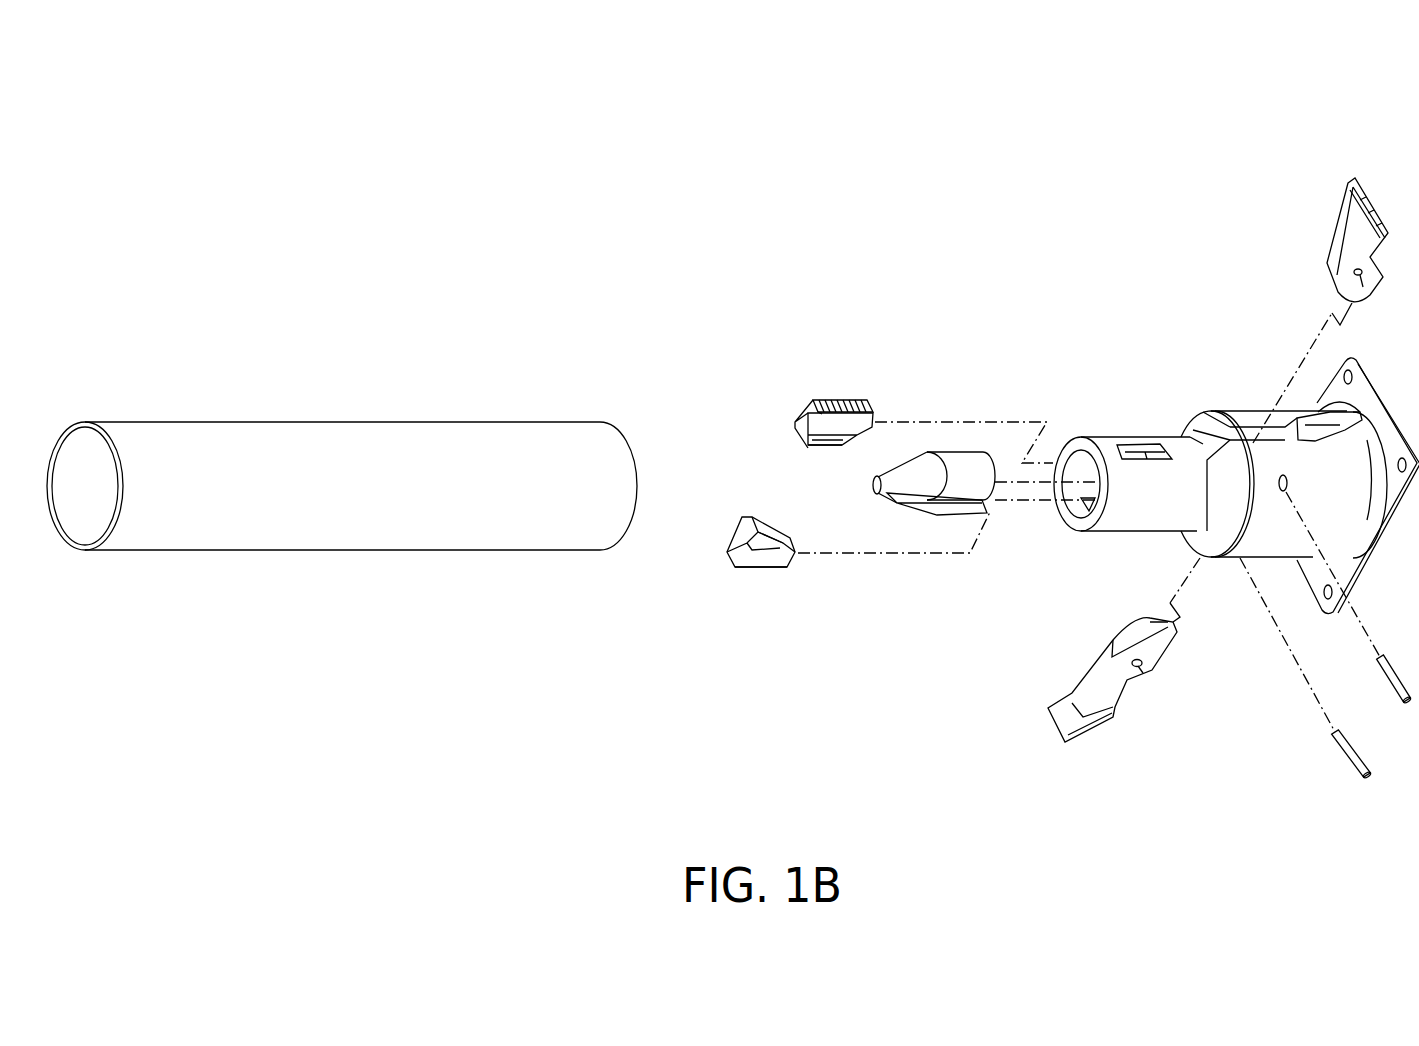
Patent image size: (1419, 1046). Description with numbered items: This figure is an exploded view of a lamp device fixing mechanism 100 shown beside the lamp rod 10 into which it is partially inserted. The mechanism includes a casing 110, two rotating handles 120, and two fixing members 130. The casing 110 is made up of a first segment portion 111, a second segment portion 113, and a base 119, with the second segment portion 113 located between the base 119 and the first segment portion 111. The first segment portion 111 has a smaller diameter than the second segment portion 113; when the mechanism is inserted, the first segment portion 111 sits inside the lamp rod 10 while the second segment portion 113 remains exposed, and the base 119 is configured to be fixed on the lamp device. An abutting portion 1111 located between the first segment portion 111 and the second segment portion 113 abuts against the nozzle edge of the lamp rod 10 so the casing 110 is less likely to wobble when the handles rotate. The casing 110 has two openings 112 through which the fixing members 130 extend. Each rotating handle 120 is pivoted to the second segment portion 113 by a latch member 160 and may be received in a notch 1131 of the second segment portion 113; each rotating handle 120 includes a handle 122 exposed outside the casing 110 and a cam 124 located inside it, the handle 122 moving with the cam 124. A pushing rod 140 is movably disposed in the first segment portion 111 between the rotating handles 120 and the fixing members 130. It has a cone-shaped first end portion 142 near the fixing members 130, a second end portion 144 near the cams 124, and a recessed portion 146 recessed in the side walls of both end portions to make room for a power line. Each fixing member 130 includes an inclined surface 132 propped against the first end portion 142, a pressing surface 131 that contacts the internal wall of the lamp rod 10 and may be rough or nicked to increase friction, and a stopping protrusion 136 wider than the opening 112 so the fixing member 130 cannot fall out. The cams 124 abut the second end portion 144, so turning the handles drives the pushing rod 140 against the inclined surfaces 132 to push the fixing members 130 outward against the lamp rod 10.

The lamp rod 10 is at (315, 372).
The lamp device fixing mechanism 100 is at (992, 185).
The casing 110 is at (1058, 280).
The first segment portion 111 is at (1105, 443).
The opening 112 is at (1152, 448).
The abutting portion 1111 is at (1193, 426).
The second segment portion 113 is at (1227, 416).
The notch 1131 is at (1313, 426).
The base 119 is at (1393, 480).
The rotating handle 120 is at (1316, 202).
The handle 122 is at (1363, 190).
The cam 124 is at (1350, 291).
The fixing member 130 is at (807, 417).
The pressing surface 131 is at (845, 401).
The inclined surface 132 is at (771, 529).
The stopping protrusion 136 is at (815, 453).
The pushing rod 140 is at (962, 462).
The first end portion 142 is at (915, 470).
The second end portion 144 is at (995, 470).
The recessed portion 146 is at (946, 514).
The latch member 160 is at (1407, 705).